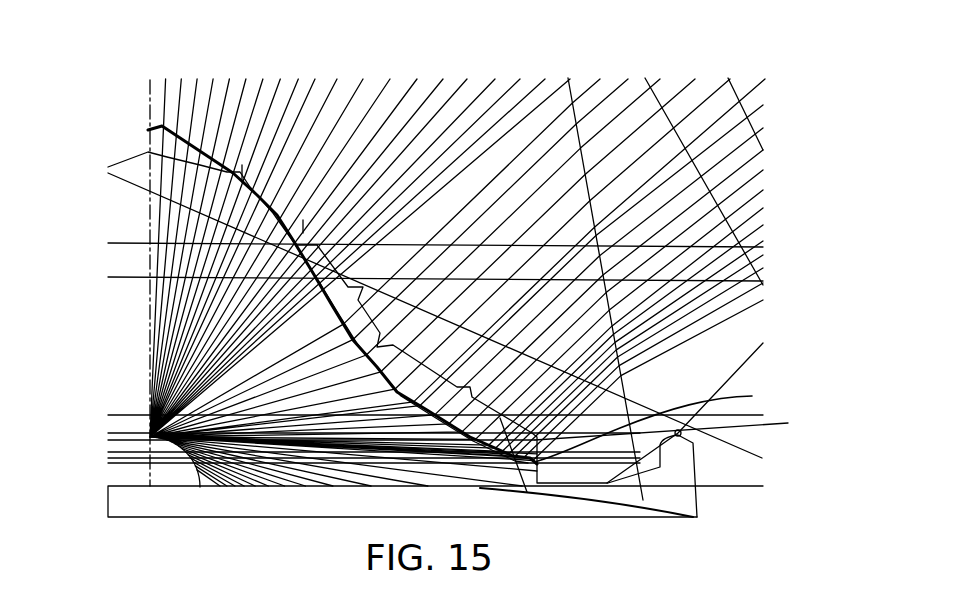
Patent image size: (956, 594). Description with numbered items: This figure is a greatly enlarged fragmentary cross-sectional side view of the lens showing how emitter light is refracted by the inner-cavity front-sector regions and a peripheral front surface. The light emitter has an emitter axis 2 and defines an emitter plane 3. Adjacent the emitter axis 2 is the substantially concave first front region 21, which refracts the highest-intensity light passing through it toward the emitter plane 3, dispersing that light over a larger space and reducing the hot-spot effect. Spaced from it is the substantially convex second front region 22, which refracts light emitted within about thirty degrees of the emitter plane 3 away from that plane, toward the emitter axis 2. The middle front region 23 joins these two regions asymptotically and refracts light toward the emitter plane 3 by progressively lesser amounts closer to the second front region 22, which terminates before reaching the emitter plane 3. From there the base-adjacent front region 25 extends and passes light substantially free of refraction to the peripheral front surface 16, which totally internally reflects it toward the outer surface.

The emitter axis 2 is at (147, 118).
The emitter plane 3 is at (133, 486).
The first front region 21 is at (242, 177).
The second front region 22 is at (470, 387).
The middle front region 23 is at (358, 295).
The base-adjacent front region 25 is at (657, 423).
The peripheral front surface 16 is at (674, 425).